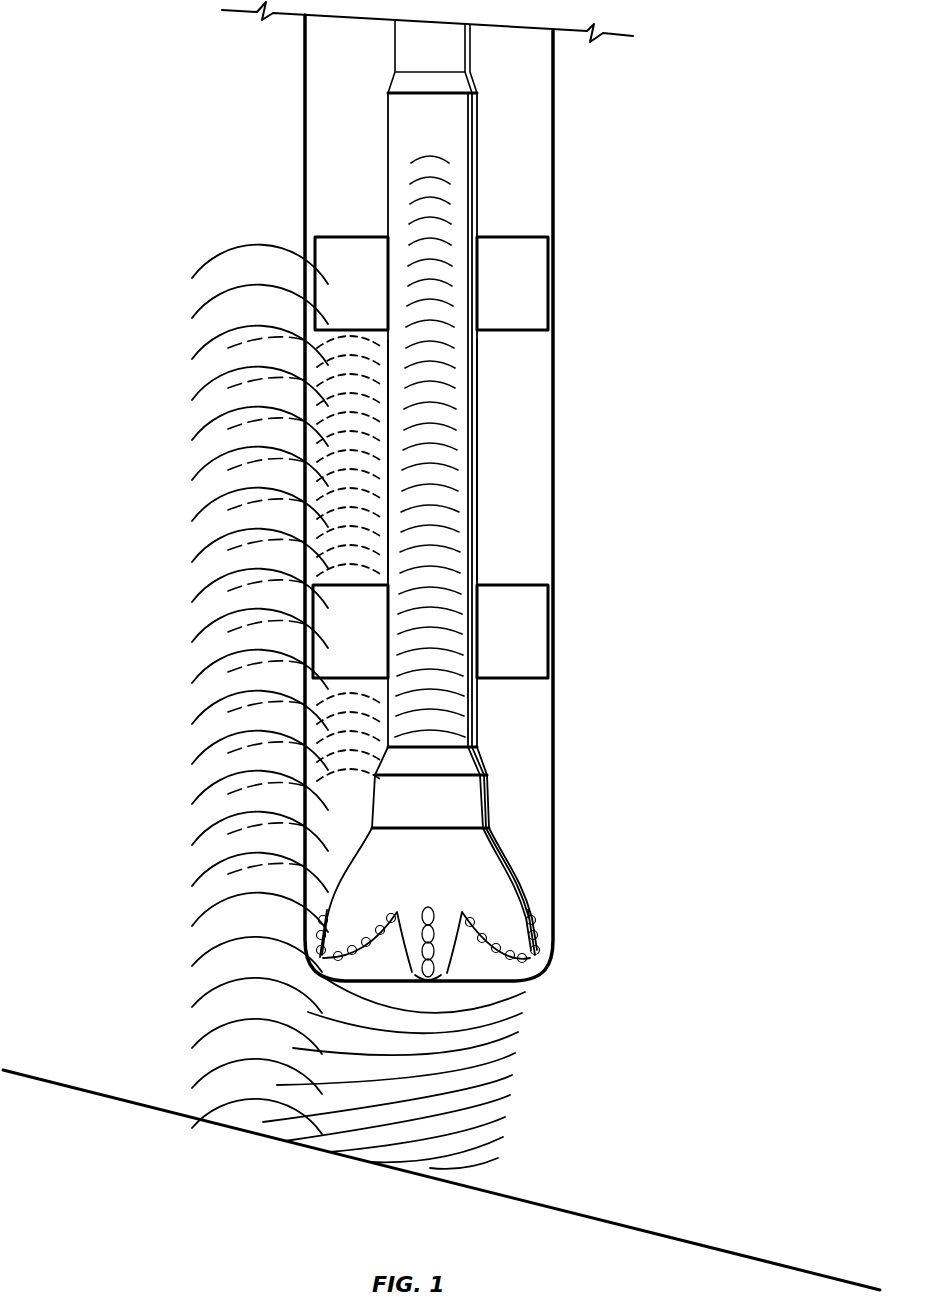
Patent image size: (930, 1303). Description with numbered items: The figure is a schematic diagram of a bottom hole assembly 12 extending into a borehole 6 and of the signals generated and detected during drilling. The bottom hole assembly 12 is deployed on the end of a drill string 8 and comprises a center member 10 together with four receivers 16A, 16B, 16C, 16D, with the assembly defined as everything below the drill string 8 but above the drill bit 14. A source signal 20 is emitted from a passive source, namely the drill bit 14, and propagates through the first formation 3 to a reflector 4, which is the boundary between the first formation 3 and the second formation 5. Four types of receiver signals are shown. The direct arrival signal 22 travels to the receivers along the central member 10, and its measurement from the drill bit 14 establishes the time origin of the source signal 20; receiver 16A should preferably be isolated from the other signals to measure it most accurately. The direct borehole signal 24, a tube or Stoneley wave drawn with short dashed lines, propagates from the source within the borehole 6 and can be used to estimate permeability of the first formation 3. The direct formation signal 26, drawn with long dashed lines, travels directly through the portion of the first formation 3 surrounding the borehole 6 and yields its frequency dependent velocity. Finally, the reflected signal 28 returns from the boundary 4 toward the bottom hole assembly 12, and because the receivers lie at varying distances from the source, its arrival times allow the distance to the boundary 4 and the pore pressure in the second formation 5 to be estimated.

The first formation 3 is at (638, 1220).
The reflector 4 is at (723, 1250).
The second formation 5 is at (638, 1274).
The borehole 6 is at (555, 456).
The drill string 8 is at (472, 58).
The center member 10 is at (480, 128).
The bottom hole assembly 12 is at (538, 393).
The drill bit 14 is at (520, 895).
The receiver 16A is at (537, 238).
The receiver 16B is at (538, 585).
The receiver 16C is at (321, 238).
The receiver 16D is at (372, 676).
The source signal 20 is at (513, 1033).
The direct arrival signal 22 is at (453, 528).
The direct borehole signal 24 is at (302, 408).
The direct formation signal 26 is at (240, 446).
The reflected signal 28 is at (198, 508).